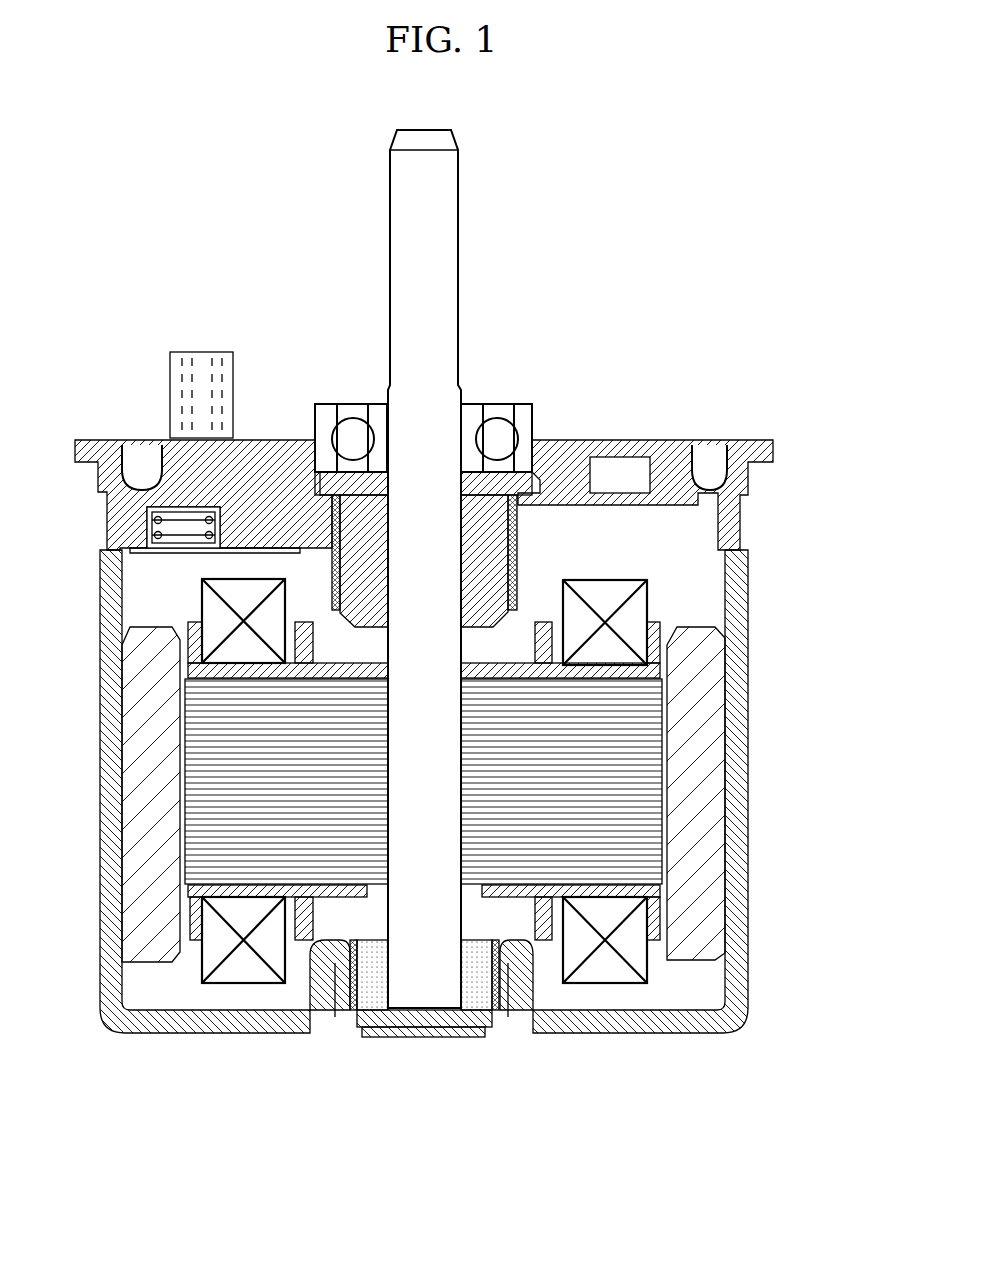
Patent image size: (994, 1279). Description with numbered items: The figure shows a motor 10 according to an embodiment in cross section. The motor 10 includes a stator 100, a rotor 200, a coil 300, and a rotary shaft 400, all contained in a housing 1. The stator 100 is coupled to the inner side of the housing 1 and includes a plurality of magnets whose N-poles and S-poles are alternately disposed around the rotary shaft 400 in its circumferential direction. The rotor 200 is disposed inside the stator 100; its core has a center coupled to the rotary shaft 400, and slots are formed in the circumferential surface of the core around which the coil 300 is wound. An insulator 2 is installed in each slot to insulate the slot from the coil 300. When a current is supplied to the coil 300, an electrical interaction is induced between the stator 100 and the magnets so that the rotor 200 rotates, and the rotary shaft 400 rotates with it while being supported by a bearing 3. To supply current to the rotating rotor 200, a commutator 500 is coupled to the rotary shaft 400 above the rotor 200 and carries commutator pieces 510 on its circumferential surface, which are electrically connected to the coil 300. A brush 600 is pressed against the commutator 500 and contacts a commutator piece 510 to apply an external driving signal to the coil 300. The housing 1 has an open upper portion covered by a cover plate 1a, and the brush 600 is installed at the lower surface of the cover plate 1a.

The housing 1 is at (203, 1033).
The cover plate 1a is at (660, 445).
The insulator 2 is at (187, 608).
The bearing 3 is at (477, 995).
The motor 10 is at (713, 296).
The stator 100 is at (745, 688).
The rotor 200 is at (606, 797).
The coil 300 is at (198, 582).
The rotary shaft 400 is at (430, 231).
The commutator 500 is at (518, 537).
The commutator piece 510 is at (484, 560).
The brush 600 is at (266, 527).